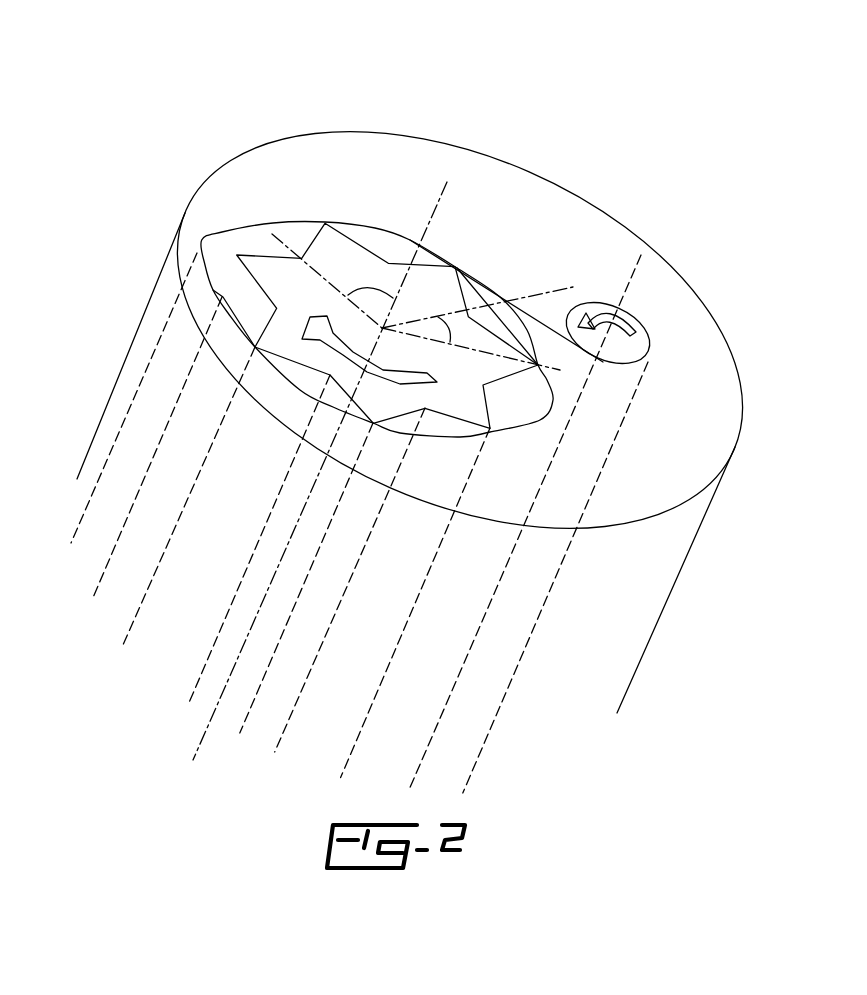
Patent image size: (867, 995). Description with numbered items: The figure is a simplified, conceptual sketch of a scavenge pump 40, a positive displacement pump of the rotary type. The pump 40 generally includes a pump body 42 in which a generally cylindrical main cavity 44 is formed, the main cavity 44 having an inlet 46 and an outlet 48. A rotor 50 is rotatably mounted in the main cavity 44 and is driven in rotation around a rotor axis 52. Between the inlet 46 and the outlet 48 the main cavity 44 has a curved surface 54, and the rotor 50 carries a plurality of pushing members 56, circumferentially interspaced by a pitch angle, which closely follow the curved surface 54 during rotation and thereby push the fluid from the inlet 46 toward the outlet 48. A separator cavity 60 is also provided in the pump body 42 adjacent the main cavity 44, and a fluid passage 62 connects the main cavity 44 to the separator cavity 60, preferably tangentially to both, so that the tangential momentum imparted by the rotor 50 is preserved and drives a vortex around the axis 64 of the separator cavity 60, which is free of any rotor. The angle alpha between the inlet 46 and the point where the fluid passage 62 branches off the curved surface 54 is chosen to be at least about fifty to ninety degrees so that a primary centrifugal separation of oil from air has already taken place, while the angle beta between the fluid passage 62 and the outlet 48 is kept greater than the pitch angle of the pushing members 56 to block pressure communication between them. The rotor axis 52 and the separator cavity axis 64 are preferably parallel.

The pump 40 is at (468, 150).
The pump body 42 is at (350, 156).
The main cavity 44 is at (307, 227).
The inlet 46 is at (222, 233).
The outlet 48 is at (552, 405).
The rotor 50 is at (268, 282).
The rotor axis 52 is at (432, 210).
The curved surface 54 is at (443, 258).
The pushing members 56 is at (256, 342).
The separator cavity 60 is at (652, 332).
The fluid passage 62 is at (500, 297).
The axis 64 is at (641, 255).